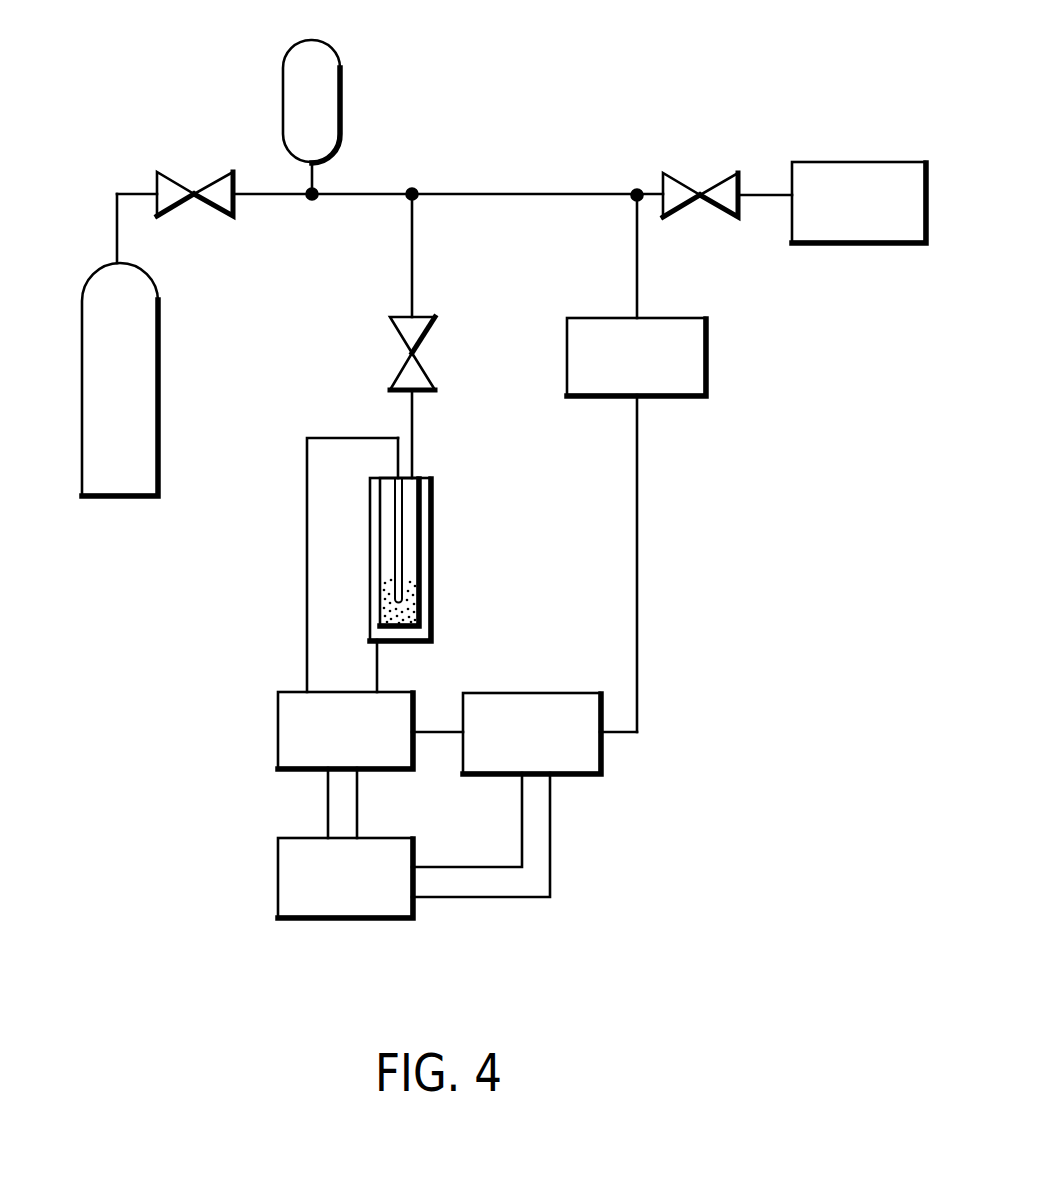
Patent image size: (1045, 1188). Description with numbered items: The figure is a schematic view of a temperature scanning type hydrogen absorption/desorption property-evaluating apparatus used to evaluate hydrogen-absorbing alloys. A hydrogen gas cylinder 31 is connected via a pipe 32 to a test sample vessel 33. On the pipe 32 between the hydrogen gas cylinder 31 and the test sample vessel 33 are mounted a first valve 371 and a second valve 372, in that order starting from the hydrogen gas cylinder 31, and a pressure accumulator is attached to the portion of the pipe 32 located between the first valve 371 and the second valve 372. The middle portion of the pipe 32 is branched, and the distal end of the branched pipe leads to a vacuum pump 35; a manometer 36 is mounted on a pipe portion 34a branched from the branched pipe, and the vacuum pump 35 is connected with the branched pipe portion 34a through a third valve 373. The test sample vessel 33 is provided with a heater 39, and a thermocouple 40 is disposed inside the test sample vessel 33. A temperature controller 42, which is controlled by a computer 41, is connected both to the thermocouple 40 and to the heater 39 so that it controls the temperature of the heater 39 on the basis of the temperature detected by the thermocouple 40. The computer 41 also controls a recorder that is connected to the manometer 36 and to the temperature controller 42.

The hydrogen gas cylinder 31 is at (137, 334).
The pipe 32 is at (412, 251).
The test sample vessel 33 is at (420, 525).
The pipe portion 34a is at (637, 275).
The vacuum pump 35 is at (889, 178).
The manometer 36 is at (695, 352).
The first valve 371 is at (194, 194).
The second valve 372 is at (414, 353).
The third valve 373 is at (700, 195).
The heater 39 is at (430, 612).
The thermocouple 40 is at (396, 553).
The computer 41 is at (295, 880).
The temperature controller 42 is at (290, 737).